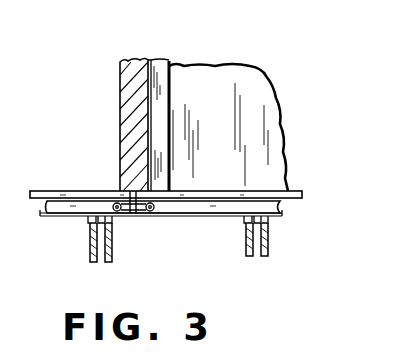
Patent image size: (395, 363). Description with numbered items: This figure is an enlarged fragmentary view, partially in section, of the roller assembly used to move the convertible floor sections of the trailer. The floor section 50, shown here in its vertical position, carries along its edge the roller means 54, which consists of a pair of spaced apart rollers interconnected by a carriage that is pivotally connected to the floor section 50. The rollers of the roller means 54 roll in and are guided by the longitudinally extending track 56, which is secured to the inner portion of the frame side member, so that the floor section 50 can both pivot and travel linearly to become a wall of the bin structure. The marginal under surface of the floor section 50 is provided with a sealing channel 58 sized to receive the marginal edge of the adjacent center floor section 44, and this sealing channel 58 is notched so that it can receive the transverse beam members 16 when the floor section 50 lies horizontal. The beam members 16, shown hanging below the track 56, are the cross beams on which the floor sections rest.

The transverse beam members 16 is at (91, 247).
The floor section 44 is at (225, 118).
The floor section 50 is at (126, 113).
The roller means 54 is at (135, 216).
The track 56 is at (62, 216).
The sealing channel 58 is at (172, 66).